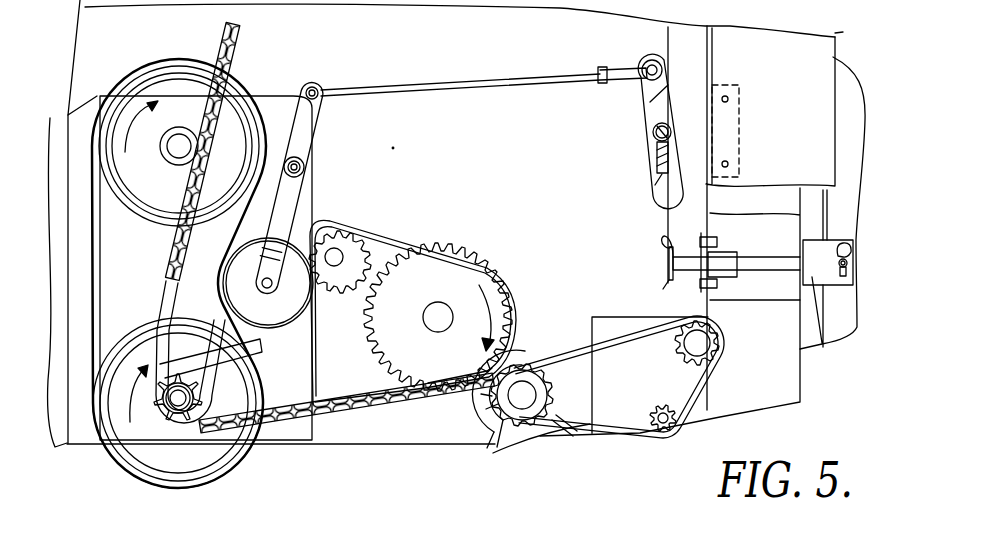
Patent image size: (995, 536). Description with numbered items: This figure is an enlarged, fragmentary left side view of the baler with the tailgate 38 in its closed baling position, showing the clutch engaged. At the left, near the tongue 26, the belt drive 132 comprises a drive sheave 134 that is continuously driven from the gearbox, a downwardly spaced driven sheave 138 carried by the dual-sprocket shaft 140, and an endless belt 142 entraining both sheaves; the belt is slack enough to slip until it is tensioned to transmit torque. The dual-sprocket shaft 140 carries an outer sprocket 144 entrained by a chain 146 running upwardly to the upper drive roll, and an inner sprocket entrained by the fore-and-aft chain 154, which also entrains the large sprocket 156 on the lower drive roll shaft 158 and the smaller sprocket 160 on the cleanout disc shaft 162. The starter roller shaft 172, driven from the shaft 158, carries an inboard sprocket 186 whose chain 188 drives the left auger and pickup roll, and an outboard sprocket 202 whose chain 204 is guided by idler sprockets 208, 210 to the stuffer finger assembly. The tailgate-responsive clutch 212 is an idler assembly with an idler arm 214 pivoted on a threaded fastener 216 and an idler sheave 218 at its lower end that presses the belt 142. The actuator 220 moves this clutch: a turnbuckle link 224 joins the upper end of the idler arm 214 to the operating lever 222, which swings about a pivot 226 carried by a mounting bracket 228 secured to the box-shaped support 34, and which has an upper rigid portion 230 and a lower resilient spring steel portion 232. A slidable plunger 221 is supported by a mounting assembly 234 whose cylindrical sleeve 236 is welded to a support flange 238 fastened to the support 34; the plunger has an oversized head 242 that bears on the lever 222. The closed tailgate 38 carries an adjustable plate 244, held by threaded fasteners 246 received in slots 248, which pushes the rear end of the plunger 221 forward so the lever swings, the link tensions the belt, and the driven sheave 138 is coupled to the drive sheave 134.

The tongue 26 is at (55, 122).
The support 34 is at (790, 398).
The tailgate 38 is at (856, 92).
The belt drive 132 is at (103, 227).
The drive sheave 134 is at (175, 62).
The driven sheave 138 is at (128, 462).
The dual-sprocket shaft 140 is at (181, 408).
The belt 142 is at (97, 315).
The outer sprocket 144 is at (196, 384).
The chain 146 is at (236, 50).
The chain 154 is at (330, 405).
The large sprocket 156 is at (465, 262).
The shaft 158 is at (438, 320).
The sprocket 160 is at (355, 230).
The shaft 162 is at (336, 263).
The starter roller shaft 172 is at (512, 393).
The inboard sprocket 186 is at (531, 446).
The chain 188 is at (505, 446).
The outboard sprocket 202 is at (546, 390).
The chain 204 is at (567, 358).
The idler sprocket 208 is at (656, 433).
The idler sprocket 210 is at (680, 354).
The tailgate-responsive clutch 212 is at (324, 129).
The idler arm 214 is at (292, 208).
The threaded fastener 216 is at (304, 166).
The idler sheave 218 is at (286, 316).
The actuator 220 is at (619, 102).
The plunger 221 is at (760, 270).
The operating lever 222 is at (649, 177).
The turnbuckle link 224 is at (451, 80).
The pivot 226 is at (655, 138).
The mounting bracket 228 is at (742, 156).
The upper rigid portion 230 is at (665, 78).
The lower resilient portion 232 is at (670, 233).
The mounting assembly 234 is at (728, 293).
The sleeve 236 is at (722, 254).
The support flange 238 is at (706, 287).
The oversized head 242 is at (664, 236).
The plate 244 is at (820, 344).
The threaded fasteners 246 is at (849, 265).
The slot 248 is at (845, 240).